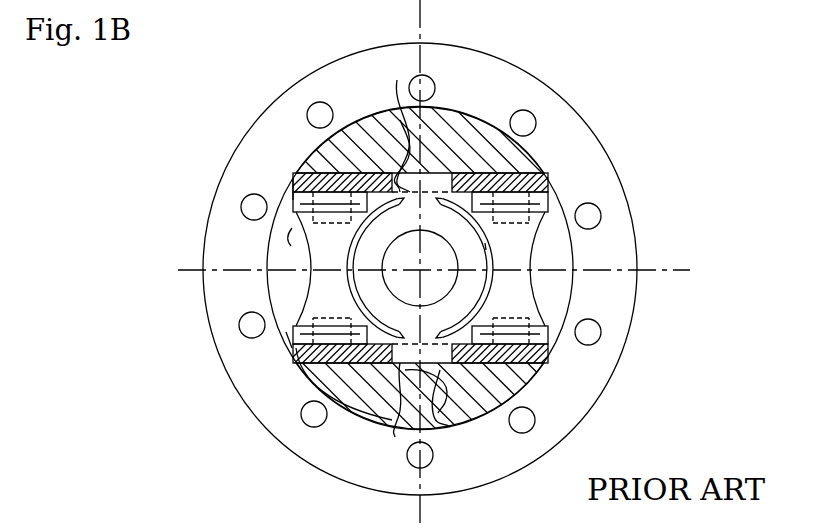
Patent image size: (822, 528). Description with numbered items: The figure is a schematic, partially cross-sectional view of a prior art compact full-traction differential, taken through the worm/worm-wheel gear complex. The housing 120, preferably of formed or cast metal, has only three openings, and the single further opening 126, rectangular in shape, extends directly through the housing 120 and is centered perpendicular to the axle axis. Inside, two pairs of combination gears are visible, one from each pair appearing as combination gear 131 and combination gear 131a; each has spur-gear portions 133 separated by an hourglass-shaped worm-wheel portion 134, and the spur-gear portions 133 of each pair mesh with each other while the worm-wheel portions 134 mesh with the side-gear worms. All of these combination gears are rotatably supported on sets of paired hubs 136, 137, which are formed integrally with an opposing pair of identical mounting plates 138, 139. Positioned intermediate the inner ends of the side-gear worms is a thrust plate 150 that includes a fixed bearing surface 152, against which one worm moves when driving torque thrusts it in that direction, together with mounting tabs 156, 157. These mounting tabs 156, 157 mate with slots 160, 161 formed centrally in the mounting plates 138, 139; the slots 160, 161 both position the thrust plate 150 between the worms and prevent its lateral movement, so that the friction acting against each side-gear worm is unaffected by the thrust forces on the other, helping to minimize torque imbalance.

The housing 120 is at (506, 76).
The single further opening 126 is at (543, 173).
The combination gear 131 is at (545, 323).
The combination gear 131a is at (293, 333).
The spur-gear portion 133 is at (379, 212).
The worm-wheel portion 134 is at (296, 318).
The hub 136 is at (289, 231).
The hub 137 is at (293, 371).
The mounting plate 138 is at (292, 188).
The mounting plate 139 is at (284, 336).
The thrust plate 150 is at (485, 243).
The bearing surface 152 is at (468, 298).
The mounting tab 156 is at (397, 80).
The mounting tab 157 is at (396, 436).
The slot 160 is at (400, 120).
The slot 161 is at (450, 427).